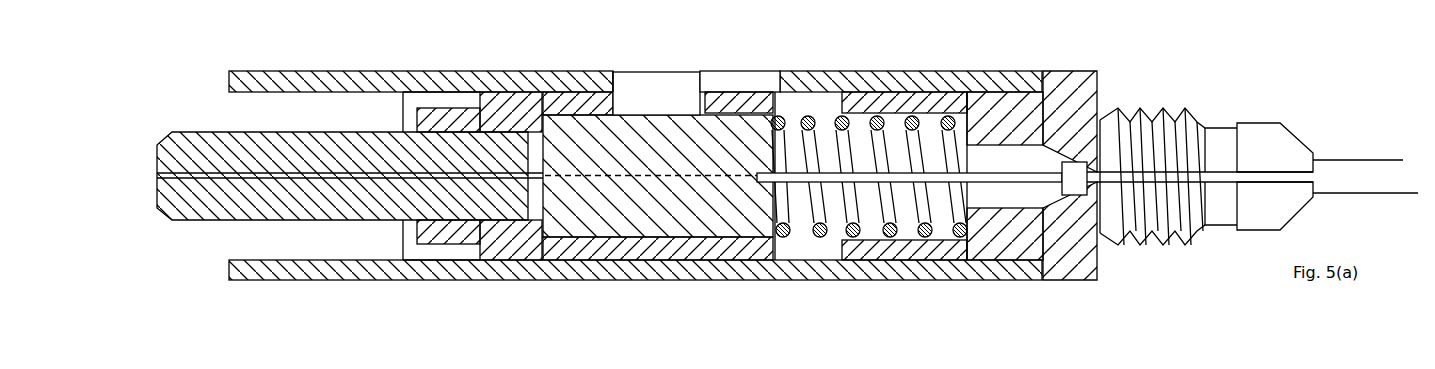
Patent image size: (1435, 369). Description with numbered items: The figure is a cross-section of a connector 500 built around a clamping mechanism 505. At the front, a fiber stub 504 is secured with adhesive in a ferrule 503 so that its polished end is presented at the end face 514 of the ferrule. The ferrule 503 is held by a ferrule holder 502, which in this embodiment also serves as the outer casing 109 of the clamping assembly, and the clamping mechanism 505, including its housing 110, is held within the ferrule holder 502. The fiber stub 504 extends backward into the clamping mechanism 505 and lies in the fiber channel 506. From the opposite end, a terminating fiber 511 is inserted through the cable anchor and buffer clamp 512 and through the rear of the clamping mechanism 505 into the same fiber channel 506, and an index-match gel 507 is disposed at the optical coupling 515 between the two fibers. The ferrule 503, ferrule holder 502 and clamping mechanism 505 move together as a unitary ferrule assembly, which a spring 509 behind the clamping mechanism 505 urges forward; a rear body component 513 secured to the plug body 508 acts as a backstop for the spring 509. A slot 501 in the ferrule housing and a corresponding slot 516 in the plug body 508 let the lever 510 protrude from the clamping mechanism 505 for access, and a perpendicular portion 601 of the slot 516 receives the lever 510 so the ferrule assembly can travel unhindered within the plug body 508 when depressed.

The connector 500 is at (193, 88).
The slot 501 is at (595, 89).
The ferrule holder 502 is at (635, 202).
The outer casing 109 is at (511, 228).
The ferrule 503 is at (257, 203).
The fiber stub 504 is at (322, 178).
The clamping mechanism 505 is at (702, 213).
The fiber channel 506 is at (580, 178).
The index-match gel 507 is at (645, 185).
The plug body 508 is at (420, 213).
The housing 110 is at (388, 262).
The spring 509 is at (815, 227).
The lever 510 is at (642, 95).
The terminating fiber 511 is at (737, 177).
The cable anchor and buffer clamp 512 is at (1222, 202).
The rear body component 513 is at (1062, 240).
The end face 514 is at (158, 195).
The optical coupling 515 is at (658, 178).
The slot 516 is at (712, 84).
The perpendicular portion 601 is at (753, 84).